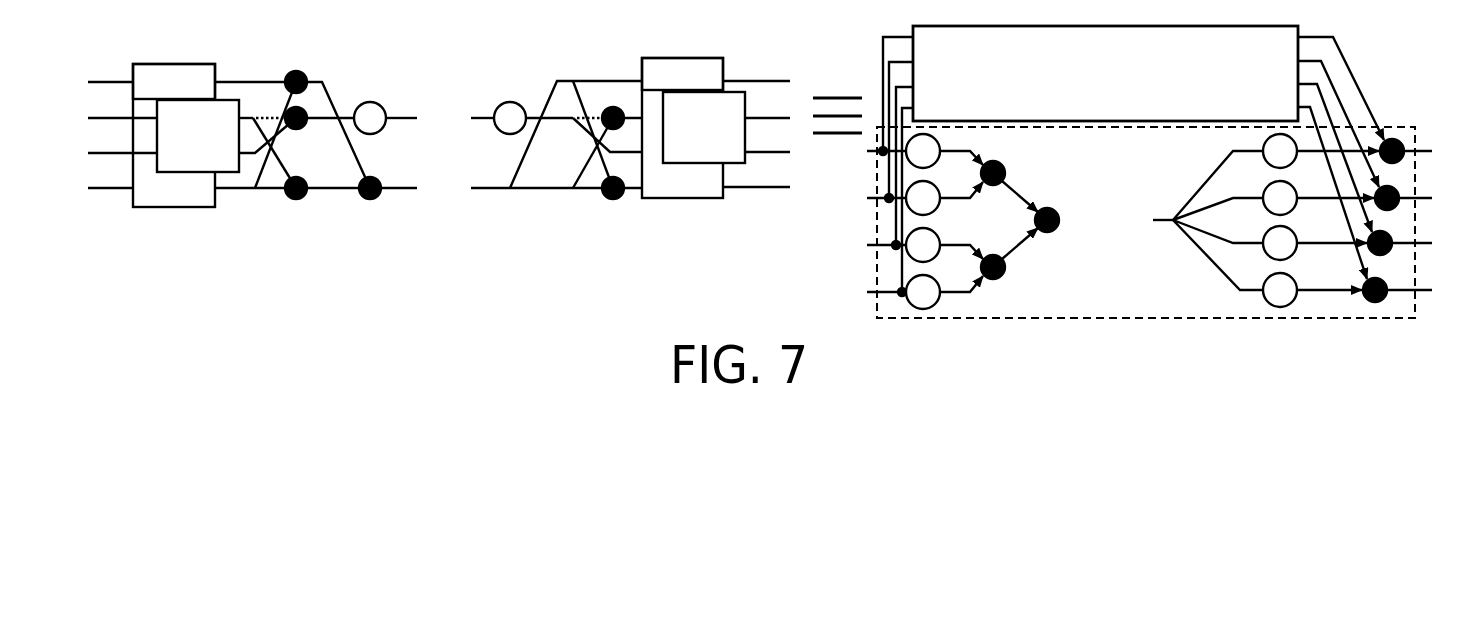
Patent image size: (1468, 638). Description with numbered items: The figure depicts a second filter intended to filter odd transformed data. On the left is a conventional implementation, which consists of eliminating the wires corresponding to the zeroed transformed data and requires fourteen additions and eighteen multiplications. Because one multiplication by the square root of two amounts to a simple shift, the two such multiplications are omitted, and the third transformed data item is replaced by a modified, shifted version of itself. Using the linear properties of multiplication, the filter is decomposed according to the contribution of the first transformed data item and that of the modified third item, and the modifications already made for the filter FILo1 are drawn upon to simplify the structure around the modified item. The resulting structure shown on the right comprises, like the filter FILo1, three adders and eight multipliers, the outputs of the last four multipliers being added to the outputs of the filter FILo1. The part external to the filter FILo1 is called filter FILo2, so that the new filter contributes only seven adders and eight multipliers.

The filter FILo1 is at (1105, 73).
The filter FILo2 is at (1045, 318).